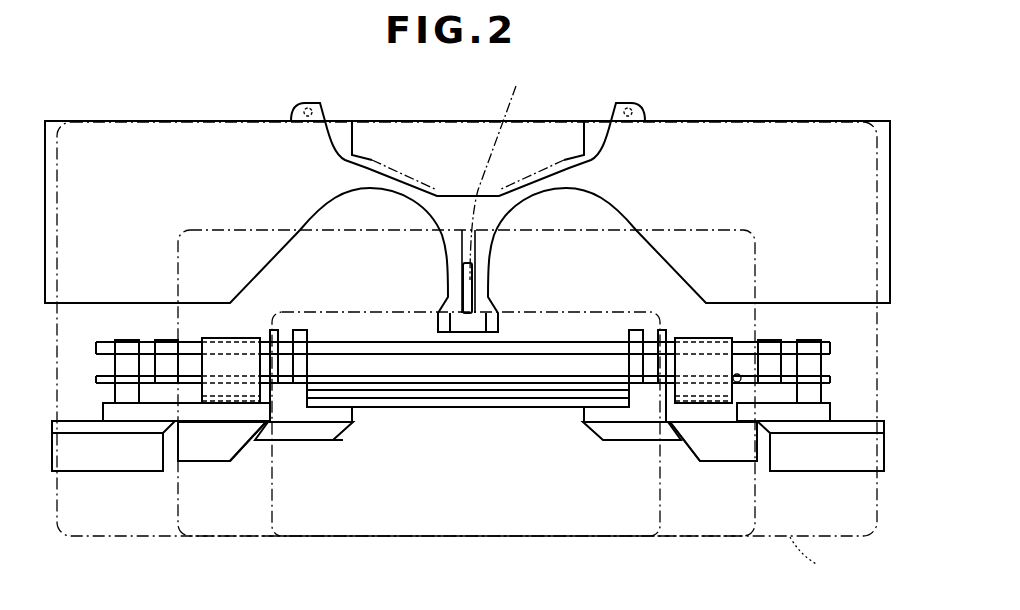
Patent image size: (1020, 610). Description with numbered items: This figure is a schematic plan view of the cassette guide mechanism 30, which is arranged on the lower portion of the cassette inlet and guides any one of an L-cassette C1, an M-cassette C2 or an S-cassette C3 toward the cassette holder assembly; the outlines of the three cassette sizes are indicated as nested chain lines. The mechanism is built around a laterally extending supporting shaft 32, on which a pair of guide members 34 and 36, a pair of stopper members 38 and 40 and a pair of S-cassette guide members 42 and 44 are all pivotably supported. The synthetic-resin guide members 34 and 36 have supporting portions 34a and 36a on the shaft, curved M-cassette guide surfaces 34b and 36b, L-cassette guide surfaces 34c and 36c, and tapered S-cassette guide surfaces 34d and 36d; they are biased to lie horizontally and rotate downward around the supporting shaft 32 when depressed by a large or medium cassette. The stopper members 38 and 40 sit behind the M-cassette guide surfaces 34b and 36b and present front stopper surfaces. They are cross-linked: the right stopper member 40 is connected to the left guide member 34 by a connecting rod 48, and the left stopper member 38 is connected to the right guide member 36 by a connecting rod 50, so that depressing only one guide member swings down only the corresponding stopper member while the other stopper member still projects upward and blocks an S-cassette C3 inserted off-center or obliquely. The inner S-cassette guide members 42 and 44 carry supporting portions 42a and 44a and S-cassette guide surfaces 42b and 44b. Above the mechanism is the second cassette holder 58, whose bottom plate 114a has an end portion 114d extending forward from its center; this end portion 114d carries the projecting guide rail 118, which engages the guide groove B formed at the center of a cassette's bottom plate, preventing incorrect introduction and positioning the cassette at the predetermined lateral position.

The second cassette holder 58 is at (185, 121).
The bottom plate 114a is at (778, 125).
The guide groove B is at (498, 191).
The L-cassette C1 is at (818, 558).
The M-cassette C2 is at (755, 510).
The S-cassette C3 is at (660, 505).
The supporting shaft 32 is at (430, 350).
The connecting rod 48 is at (527, 384).
The supporting portion 34a is at (128, 342).
The stopper member 38 is at (223, 355).
The S-cassette guide member 42 is at (298, 441).
The supporting portion 42a is at (308, 360).
The S-cassette guide surface 42b is at (349, 438).
The connecting rod 50 is at (343, 437).
The M-cassette guide surface 34b is at (202, 455).
The S-cassette guide surface 34d is at (243, 447).
The guide member 34 is at (152, 462).
The L-cassette guide surface 34c is at (87, 462).
The S-cassette guide member 44 is at (590, 442).
The supporting portion 44a is at (628, 365).
The S-cassette guide surface 44b is at (633, 441).
The stopper member 40 is at (712, 338).
The supporting portion 36a is at (812, 378).
The M-cassette guide surface 36b is at (733, 458).
The S-cassette guide surface 36d is at (693, 445).
The guide member 36 is at (783, 475).
The L-cassette guide surface 36c is at (832, 462).
The end portion 114d is at (480, 325).
The projecting guide rail 118 is at (470, 284).
The cassette guide mechanism 30 is at (471, 452).